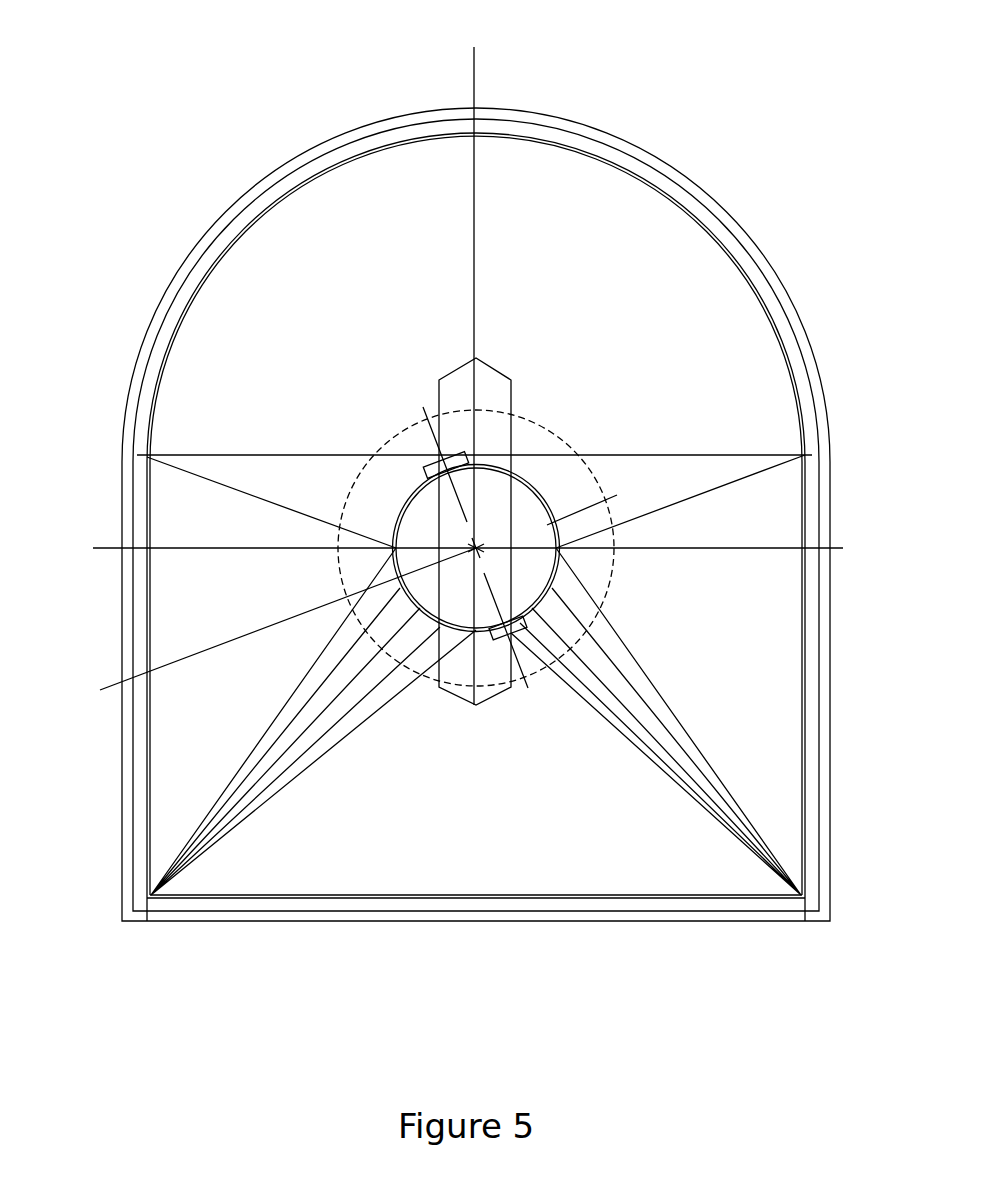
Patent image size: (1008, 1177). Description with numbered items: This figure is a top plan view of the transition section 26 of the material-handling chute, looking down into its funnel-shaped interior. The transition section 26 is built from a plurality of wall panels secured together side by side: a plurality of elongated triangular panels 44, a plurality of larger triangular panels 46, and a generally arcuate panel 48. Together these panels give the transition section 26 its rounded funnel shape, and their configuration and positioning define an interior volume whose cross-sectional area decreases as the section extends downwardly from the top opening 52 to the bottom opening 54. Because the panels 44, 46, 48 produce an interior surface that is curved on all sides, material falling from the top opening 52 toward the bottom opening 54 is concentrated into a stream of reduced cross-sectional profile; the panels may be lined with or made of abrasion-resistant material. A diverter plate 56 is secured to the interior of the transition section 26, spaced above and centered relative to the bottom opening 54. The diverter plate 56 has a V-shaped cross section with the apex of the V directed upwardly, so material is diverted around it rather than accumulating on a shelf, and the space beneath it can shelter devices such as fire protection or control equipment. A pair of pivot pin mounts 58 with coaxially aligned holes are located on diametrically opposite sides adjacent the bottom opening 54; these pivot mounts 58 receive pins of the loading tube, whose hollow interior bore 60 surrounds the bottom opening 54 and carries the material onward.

The transition section 26 is at (127, 638).
The elongated triangular panels 44 is at (241, 752).
The larger triangular panels 46 is at (203, 592).
The arcuate panel 48 is at (257, 243).
The top opening 52 is at (654, 253).
The bottom opening 54 is at (517, 512).
The diverter plate 56 is at (460, 380).
The pivot pin mounts 58 is at (423, 475).
The interior bore 60 is at (430, 527).